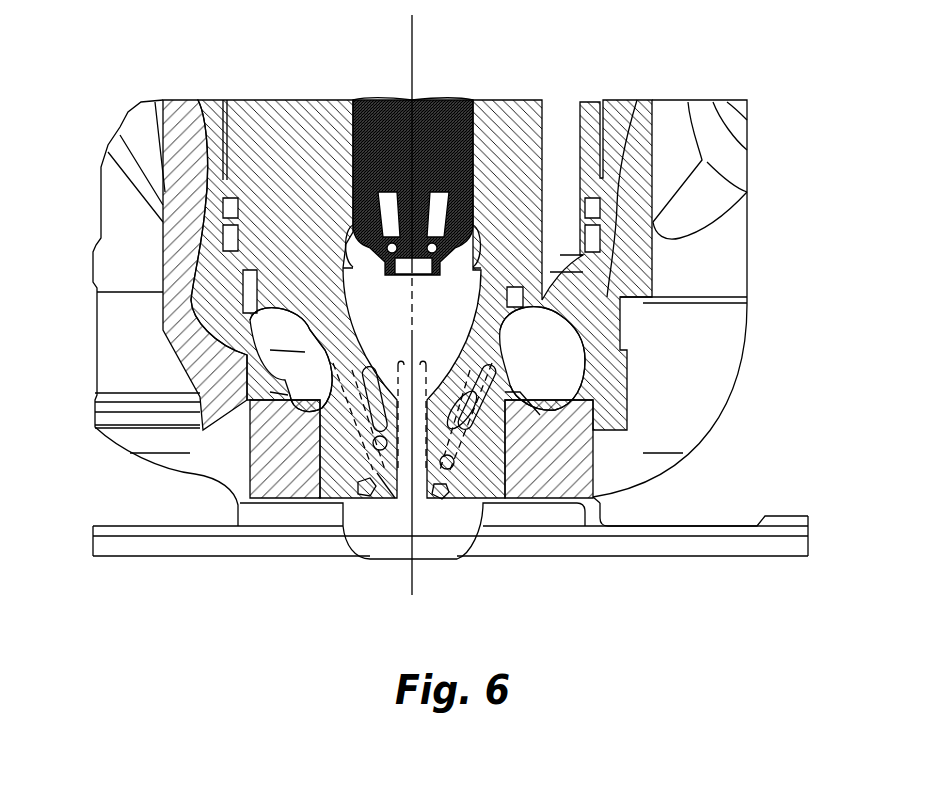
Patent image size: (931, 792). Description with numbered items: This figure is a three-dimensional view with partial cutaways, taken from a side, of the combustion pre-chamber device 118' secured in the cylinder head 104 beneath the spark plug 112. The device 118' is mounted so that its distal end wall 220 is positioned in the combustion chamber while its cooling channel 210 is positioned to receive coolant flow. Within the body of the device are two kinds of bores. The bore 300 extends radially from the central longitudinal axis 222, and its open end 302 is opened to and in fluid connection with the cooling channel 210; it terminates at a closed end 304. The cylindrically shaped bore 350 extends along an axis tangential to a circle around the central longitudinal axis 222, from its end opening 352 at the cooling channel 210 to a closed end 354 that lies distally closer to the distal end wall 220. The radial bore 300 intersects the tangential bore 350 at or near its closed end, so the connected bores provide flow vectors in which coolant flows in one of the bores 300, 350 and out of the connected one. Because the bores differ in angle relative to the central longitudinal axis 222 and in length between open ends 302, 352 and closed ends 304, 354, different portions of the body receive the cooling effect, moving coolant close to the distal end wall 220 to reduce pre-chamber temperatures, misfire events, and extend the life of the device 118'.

The cylinder head 104 is at (713, 240).
The spark plug 112 is at (393, 100).
The combustion pre-chamber device 118' is at (584, 496).
The cooling channel 210 is at (197, 107).
The distal end wall 220 is at (420, 562).
The central longitudinal axis 222 is at (413, 30).
The bore 300 is at (322, 498).
The open end 302 is at (303, 352).
The closed end 304 is at (377, 473).
The bore 350 is at (443, 405).
The end opening 352 is at (520, 350).
The closed end 354 is at (358, 503).